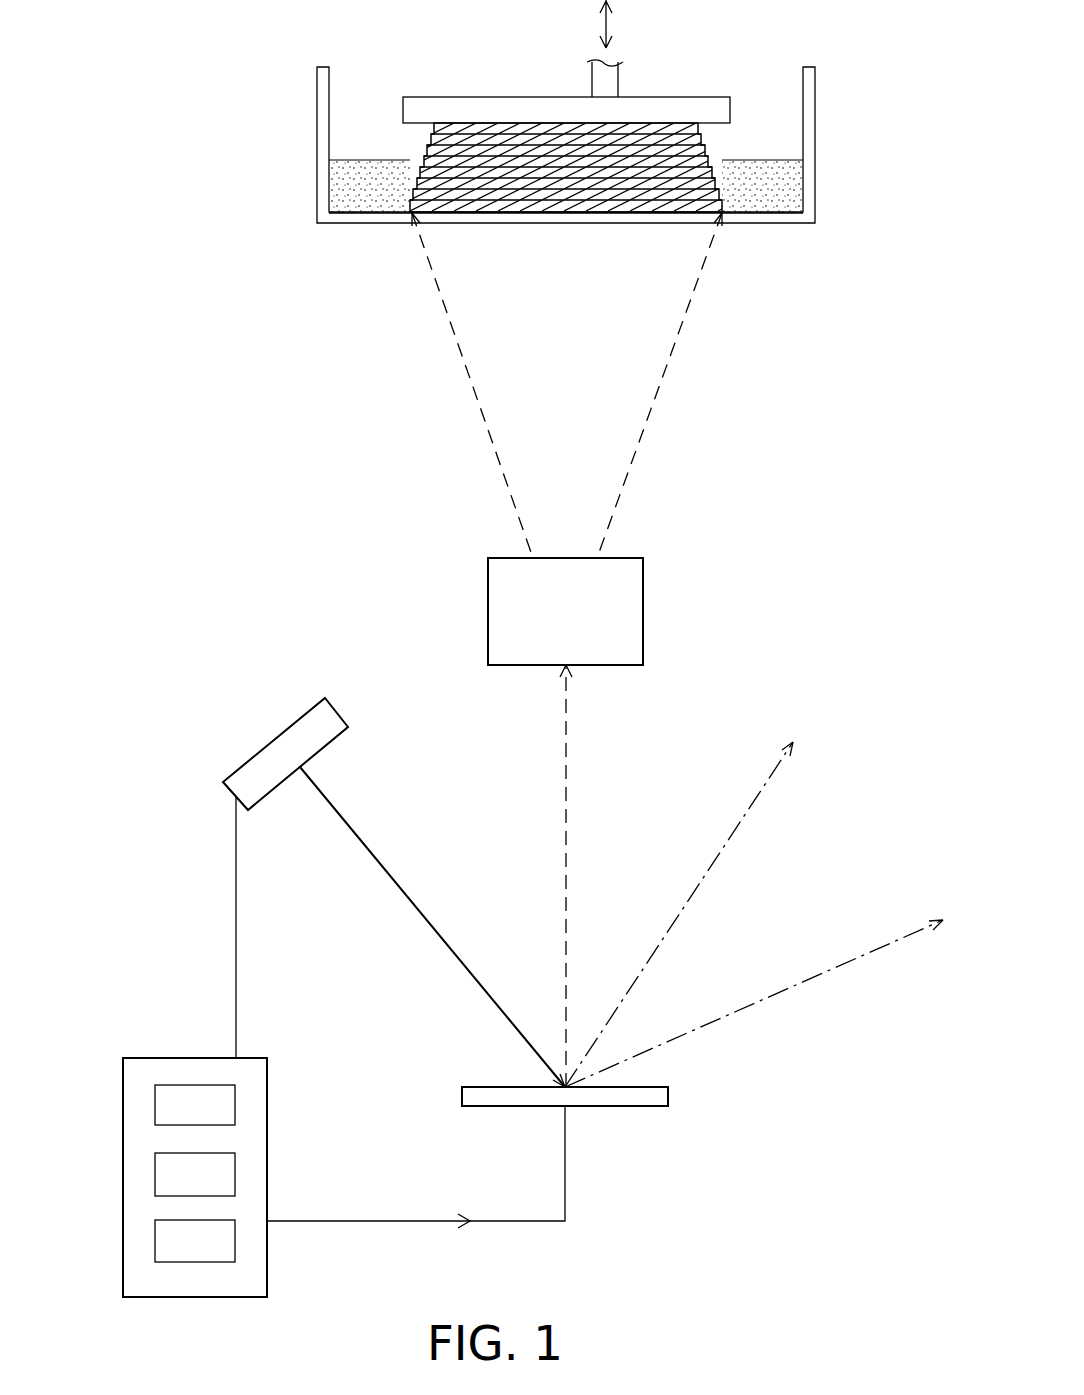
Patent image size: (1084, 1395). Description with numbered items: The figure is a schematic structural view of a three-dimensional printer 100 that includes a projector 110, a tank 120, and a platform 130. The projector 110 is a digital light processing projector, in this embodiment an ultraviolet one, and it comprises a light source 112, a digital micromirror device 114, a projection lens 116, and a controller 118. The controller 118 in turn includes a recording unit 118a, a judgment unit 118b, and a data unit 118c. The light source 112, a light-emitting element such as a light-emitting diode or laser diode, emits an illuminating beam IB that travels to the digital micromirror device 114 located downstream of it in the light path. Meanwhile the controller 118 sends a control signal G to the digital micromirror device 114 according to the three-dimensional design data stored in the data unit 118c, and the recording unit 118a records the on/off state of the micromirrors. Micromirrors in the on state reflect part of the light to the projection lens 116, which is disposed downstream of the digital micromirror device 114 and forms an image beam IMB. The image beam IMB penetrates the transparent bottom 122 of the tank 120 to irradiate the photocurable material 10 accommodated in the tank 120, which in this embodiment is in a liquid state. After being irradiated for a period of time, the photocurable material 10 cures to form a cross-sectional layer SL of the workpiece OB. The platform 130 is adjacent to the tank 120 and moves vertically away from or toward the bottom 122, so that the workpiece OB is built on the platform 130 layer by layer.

The three-dimensional printer 100 is at (887, 1290).
The photocurable material 10 is at (790, 178).
The projector 110 is at (223, 785).
The light source 112 is at (172, 24).
The digital micromirror device 114 is at (514, 1108).
The projection lens 116 is at (635, 609).
The controller 118 is at (161, 688).
The recording unit 118a is at (220, 1118).
The judgment unit 118b is at (220, 1188).
The data unit 118c is at (220, 1253).
The tank 120 is at (836, 105).
The bottom 122 is at (503, 215).
The platform 130 is at (713, 103).
The workpiece OB is at (724, 211).
The cross-sectional layer SL is at (412, 206).
The image beam IMB is at (645, 427).
The illuminating beam IB is at (424, 920).
The control signal G is at (416, 1167).